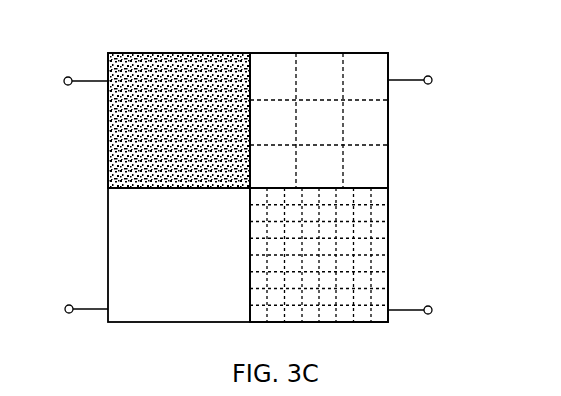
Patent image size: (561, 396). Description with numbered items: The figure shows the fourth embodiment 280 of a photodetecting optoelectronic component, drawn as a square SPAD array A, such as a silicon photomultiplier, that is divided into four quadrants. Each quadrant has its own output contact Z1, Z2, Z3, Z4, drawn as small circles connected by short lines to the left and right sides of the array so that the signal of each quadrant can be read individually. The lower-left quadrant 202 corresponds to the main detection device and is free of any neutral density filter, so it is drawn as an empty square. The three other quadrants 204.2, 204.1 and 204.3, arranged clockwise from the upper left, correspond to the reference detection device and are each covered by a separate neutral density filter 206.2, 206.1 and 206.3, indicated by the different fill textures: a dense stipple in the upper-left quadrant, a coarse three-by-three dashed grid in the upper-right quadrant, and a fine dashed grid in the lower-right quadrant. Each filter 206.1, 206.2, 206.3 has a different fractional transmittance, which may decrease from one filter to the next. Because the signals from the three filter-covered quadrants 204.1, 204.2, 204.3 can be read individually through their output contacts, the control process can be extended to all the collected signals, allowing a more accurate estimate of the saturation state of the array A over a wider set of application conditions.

The main detection quadrant 202 is at (183, 302).
The first reference detection quadrant 204.1 is at (320, 63).
The second reference detection quadrant 204.2 is at (203, 60).
The third reference detection quadrant 204.3 is at (383, 217).
The first neutral density filter 206.1 is at (372, 167).
The second neutral density filter 206.2 is at (133, 52).
The third neutral density filter 206.3 is at (383, 323).
The fourth embodiment 280 is at (501, 165).
The SPAD array A is at (369, 52).
The first output contact Z1 is at (70, 313).
The second output contact Z2 is at (429, 75).
The third output contact Z3 is at (68, 85).
The fourth output contact Z4 is at (428, 305).